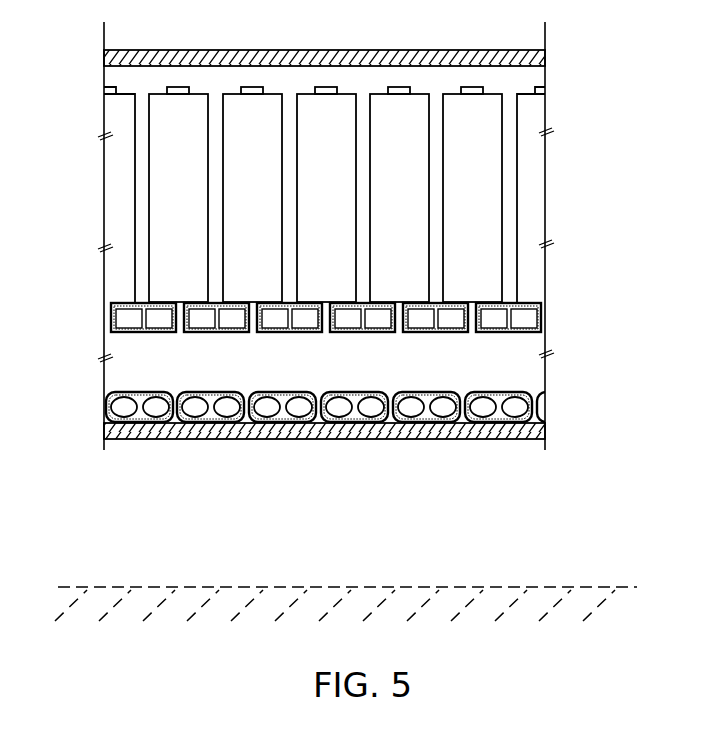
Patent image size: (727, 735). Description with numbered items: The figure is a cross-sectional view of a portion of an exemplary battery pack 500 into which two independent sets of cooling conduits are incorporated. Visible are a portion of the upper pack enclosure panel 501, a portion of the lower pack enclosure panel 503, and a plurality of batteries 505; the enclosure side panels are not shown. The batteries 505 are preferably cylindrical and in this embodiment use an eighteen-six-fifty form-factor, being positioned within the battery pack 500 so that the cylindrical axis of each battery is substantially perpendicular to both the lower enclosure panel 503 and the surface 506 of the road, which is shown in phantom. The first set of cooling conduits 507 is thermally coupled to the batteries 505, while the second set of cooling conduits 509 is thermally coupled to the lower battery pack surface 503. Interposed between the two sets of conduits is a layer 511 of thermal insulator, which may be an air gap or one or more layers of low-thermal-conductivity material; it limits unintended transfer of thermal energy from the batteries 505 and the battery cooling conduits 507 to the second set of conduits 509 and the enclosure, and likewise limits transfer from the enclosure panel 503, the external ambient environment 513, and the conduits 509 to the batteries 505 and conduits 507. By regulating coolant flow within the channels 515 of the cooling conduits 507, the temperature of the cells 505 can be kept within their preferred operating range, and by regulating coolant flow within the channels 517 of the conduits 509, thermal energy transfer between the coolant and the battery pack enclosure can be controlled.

The battery pack 500 is at (602, 87).
The upper pack enclosure panel 501 is at (222, 50).
The lower pack enclosure panel 503 is at (372, 439).
The batteries 505 is at (492, 203).
The surface of the road 506 is at (324, 582).
The first set of cooling conduits 507 is at (210, 303).
The second set of cooling conduits 509 is at (207, 392).
The layer of thermal insulator 511 is at (343, 369).
The external ambient environment 513 is at (348, 496).
The channels 515 is at (525, 316).
The channels 517 is at (487, 402).